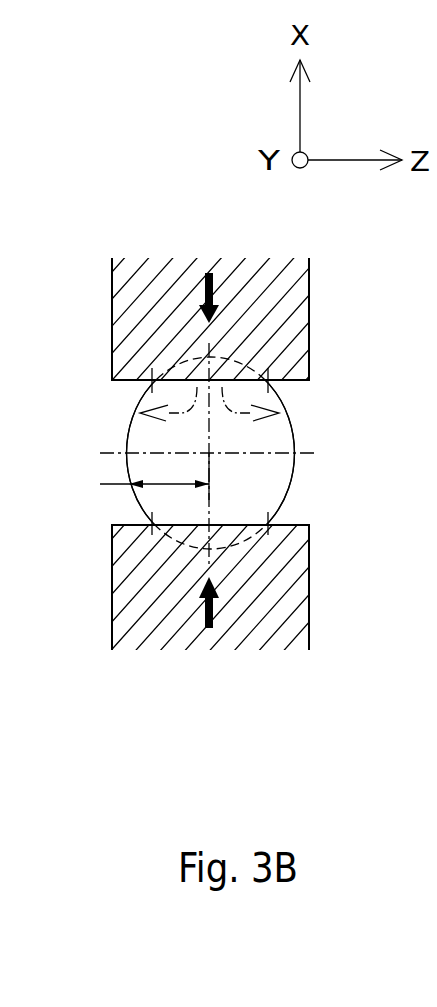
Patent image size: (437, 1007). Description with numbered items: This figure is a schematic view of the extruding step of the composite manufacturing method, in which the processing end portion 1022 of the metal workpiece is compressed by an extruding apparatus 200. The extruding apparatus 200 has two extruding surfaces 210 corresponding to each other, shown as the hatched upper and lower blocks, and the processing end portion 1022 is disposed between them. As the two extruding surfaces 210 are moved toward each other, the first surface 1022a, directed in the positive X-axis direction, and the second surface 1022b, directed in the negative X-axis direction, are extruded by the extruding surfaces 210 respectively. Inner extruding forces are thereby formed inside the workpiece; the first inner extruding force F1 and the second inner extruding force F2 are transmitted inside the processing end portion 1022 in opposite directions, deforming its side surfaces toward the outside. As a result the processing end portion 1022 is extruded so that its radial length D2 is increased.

The extruding apparatus 200 is at (309, 300).
The extruding surfaces 210 is at (176, 368).
The processing end portion 1022 is at (294, 437).
The first surface 1022a is at (240, 381).
The second surface 1022b is at (231, 525).
The first inner extruding force F1 is at (146, 408).
The second inner extruding force F2 is at (272, 408).
The radial length D2 is at (133, 476).